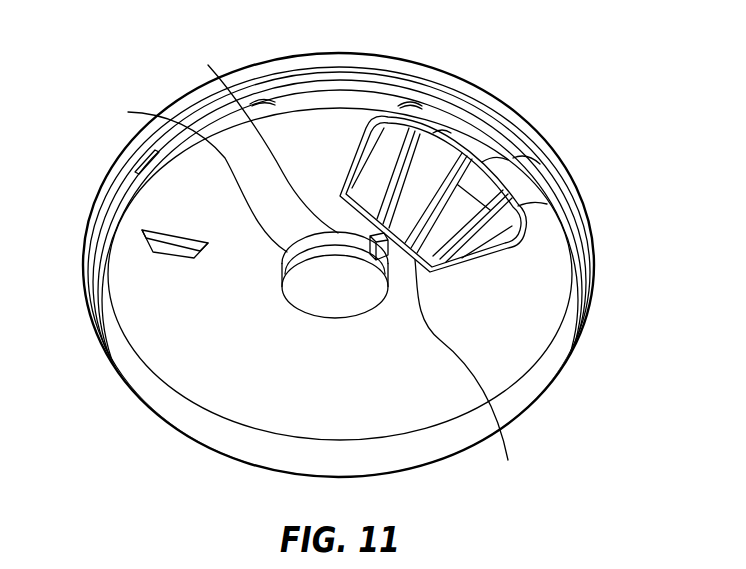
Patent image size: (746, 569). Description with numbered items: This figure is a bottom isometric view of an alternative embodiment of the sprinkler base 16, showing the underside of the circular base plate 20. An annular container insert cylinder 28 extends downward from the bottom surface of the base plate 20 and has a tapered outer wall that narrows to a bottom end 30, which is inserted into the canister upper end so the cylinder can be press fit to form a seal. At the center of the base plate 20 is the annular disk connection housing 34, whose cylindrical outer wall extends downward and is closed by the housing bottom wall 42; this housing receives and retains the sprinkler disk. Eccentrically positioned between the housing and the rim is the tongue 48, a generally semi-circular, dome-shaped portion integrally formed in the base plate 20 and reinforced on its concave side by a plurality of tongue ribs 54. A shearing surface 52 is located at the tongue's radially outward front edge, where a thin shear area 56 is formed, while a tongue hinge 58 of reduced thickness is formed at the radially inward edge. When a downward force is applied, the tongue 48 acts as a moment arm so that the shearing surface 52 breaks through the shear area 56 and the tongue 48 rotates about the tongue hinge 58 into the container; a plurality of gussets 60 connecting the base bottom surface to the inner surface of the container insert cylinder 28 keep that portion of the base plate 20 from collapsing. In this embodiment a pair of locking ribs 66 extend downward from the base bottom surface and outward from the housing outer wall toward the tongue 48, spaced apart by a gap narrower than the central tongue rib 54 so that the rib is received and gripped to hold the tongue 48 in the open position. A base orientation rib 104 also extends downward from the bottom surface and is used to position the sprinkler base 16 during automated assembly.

The sprinkler base 16 is at (627, 347).
The base plate 20 is at (258, 405).
The container insert cylinder 28 is at (295, 95).
The bottom end 30 is at (155, 418).
The disk connection housing 34 is at (182, 175).
The housing bottom wall 42 is at (300, 287).
The tongue 48 is at (473, 141).
The shearing surface 52 is at (397, 132).
The tongue ribs 54 is at (482, 197).
The shear area 56 is at (530, 227).
The tongue hinge 58 is at (467, 371).
The gussets 60 is at (413, 205).
The locking ribs 66 is at (262, 141).
The base orientation rib 104 is at (158, 240).